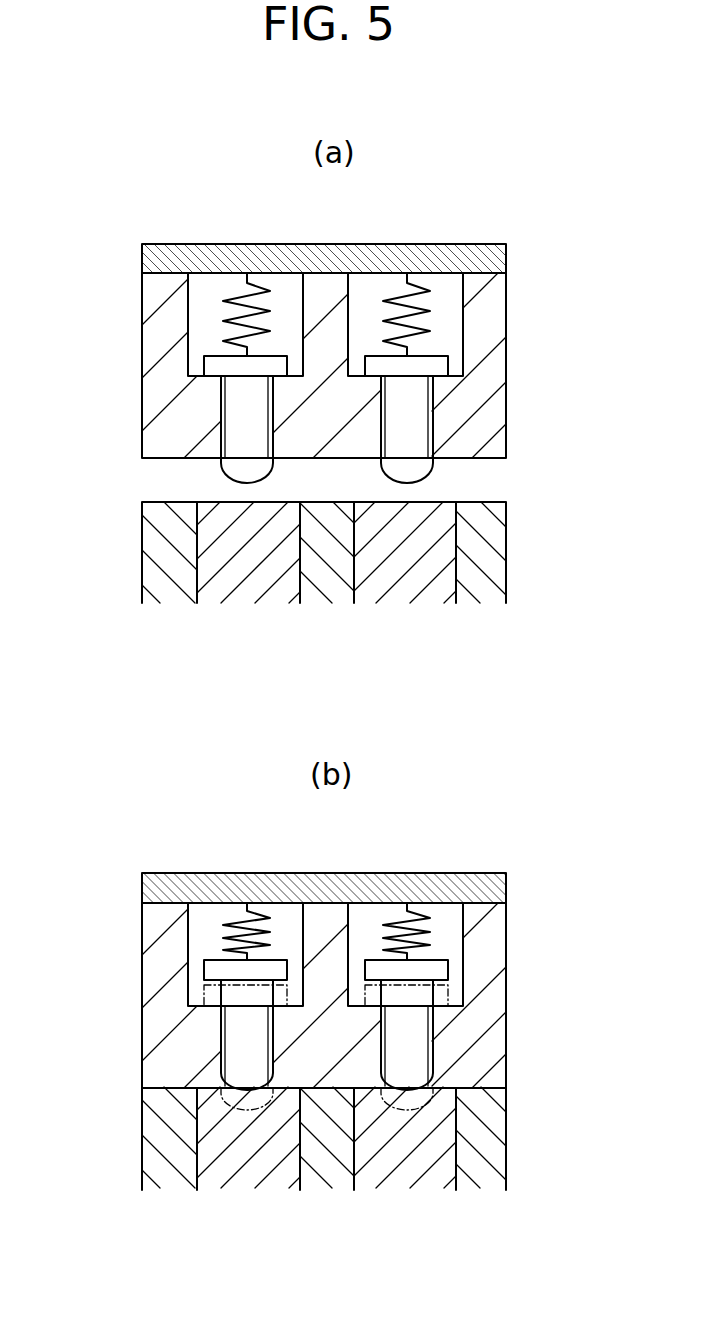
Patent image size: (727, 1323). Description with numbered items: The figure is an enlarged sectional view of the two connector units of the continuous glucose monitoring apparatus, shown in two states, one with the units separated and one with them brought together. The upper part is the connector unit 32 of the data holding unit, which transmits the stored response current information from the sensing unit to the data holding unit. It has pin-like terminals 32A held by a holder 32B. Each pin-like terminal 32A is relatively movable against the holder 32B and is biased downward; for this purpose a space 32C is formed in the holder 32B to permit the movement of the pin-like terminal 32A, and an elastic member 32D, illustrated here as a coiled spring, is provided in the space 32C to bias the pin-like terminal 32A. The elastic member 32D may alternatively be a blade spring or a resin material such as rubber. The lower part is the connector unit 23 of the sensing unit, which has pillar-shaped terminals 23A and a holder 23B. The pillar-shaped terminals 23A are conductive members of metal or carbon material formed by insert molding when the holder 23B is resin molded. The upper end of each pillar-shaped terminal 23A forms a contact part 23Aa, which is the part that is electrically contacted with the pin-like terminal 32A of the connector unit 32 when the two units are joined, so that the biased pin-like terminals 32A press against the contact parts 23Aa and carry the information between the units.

The connector unit 32 is at (508, 342).
The pin-like terminal 32A is at (232, 427).
The holder 32B is at (163, 345).
The space 32C is at (200, 327).
The elastic member 32D is at (237, 297).
The connector unit 23 is at (508, 530).
The pillar-shaped terminal 23A is at (250, 583).
The contact part 23Aa is at (213, 500).
The holder 23B is at (495, 570).